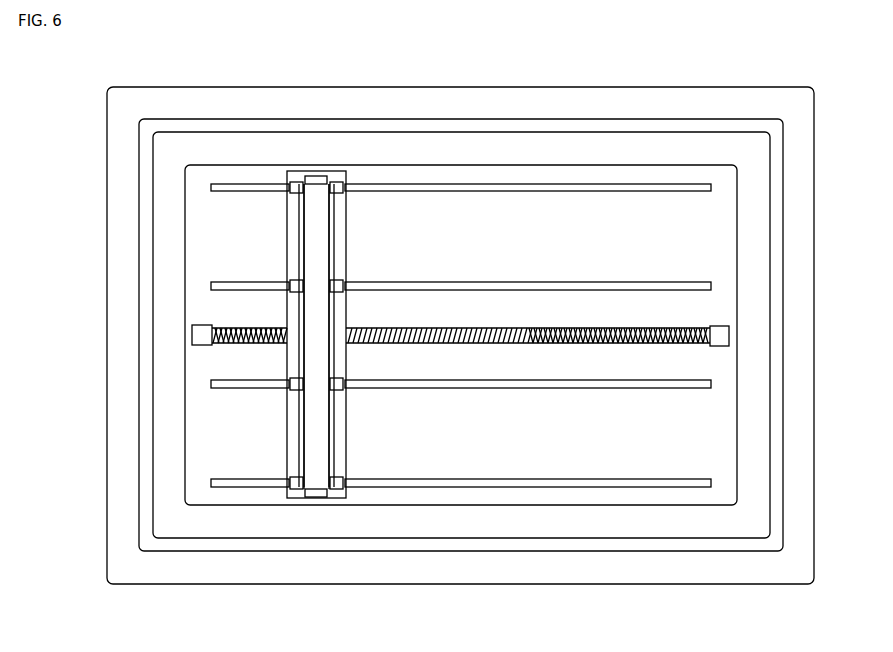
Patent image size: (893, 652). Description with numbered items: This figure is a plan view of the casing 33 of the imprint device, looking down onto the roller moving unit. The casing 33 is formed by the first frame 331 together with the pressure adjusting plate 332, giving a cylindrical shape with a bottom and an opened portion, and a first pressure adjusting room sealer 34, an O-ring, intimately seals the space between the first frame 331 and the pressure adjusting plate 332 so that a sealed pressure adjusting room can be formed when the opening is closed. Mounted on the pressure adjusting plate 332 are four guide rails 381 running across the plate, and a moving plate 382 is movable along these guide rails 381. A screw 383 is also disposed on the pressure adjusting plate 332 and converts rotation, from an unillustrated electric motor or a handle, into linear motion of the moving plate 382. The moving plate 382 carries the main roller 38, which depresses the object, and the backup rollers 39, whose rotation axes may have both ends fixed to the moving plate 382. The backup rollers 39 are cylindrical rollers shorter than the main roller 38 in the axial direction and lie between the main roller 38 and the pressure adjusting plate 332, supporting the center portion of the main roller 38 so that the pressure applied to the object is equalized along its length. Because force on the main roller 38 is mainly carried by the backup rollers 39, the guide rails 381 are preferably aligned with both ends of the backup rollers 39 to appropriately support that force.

The casing 33 is at (96, 71).
The first pressure adjusting room sealer 34 is at (147, 198).
The first frame 331 is at (130, 293).
The pressure adjusting plate 332 is at (588, 213).
The main roller 38 is at (313, 215).
The backup rollers 39 is at (295, 218).
The guide rails 381 is at (418, 186).
The moving plate 382 is at (296, 492).
The screw 383 is at (445, 342).